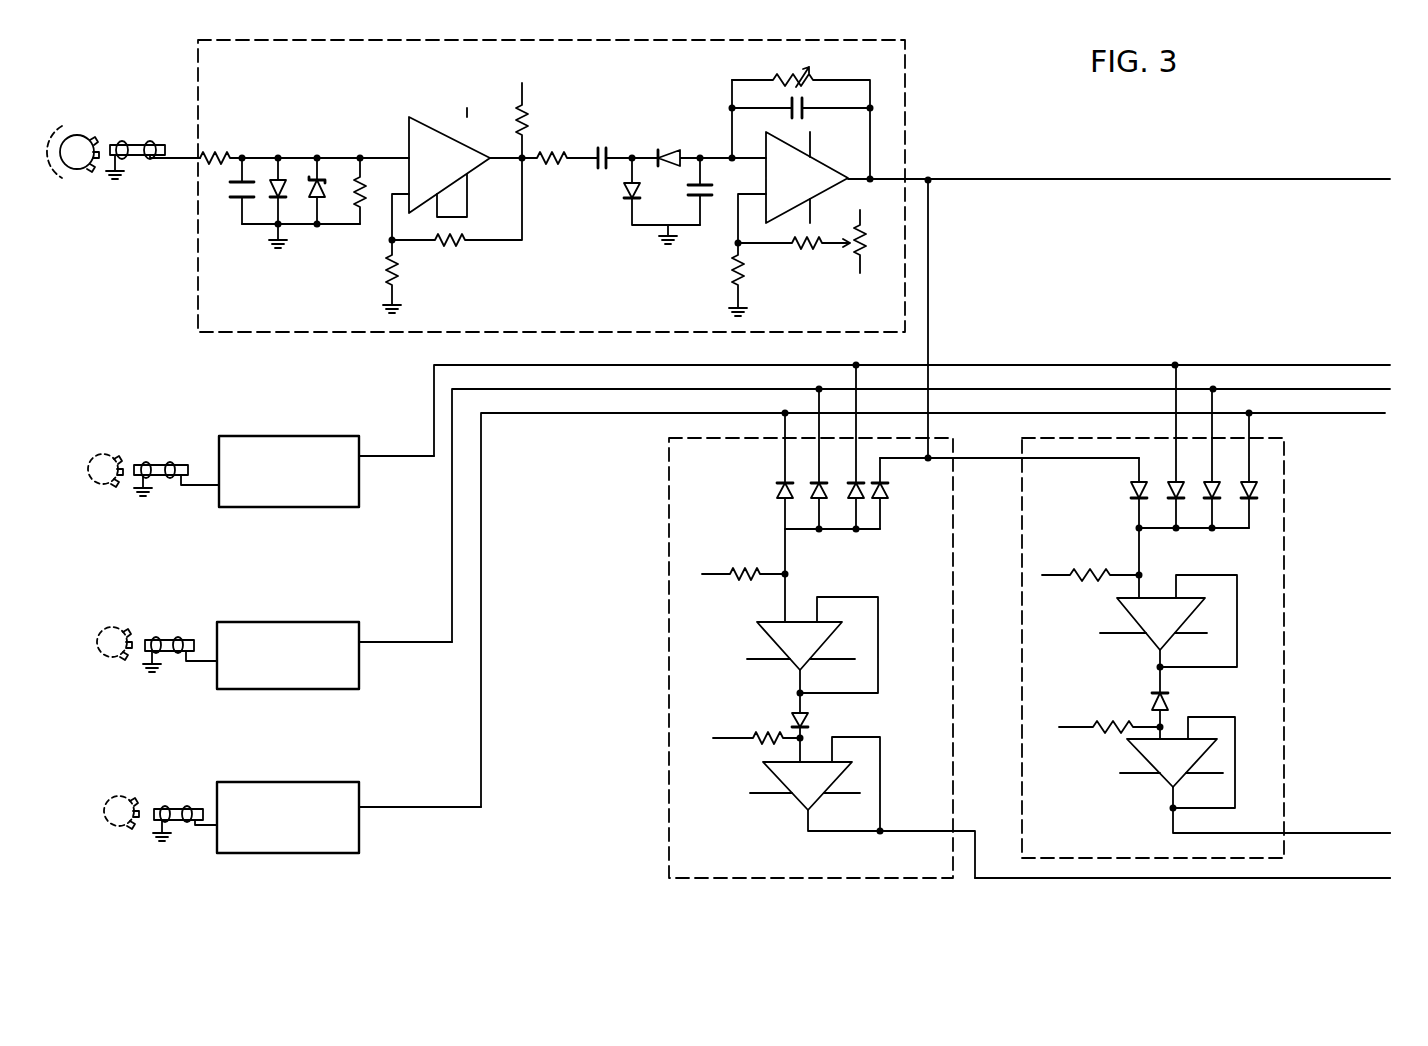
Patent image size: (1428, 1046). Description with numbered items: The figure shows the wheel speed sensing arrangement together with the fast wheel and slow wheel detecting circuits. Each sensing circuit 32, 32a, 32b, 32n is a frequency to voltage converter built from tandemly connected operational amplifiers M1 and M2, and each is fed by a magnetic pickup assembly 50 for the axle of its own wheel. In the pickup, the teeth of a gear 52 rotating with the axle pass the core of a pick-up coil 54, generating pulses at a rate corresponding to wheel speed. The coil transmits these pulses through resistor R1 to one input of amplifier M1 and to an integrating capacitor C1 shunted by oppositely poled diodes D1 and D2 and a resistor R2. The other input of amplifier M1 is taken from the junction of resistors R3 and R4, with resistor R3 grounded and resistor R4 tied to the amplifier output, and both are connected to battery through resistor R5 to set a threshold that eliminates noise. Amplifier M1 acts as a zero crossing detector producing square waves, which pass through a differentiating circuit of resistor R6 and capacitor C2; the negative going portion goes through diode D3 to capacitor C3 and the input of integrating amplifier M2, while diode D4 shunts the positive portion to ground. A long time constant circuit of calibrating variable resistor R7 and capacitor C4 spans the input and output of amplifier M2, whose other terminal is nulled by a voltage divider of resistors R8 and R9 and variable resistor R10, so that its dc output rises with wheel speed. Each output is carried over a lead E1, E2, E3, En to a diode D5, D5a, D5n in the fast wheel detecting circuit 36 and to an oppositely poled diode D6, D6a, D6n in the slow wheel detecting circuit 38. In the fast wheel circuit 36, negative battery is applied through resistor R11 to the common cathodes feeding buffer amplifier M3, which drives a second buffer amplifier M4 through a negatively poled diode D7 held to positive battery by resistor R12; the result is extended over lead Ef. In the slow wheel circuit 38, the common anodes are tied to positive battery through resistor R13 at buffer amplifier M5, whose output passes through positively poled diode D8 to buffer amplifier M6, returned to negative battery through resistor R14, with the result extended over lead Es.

The sensing circuit 32 is at (551, 186).
The sensing circuit 32a is at (326, 471).
The sensing circuit 32b is at (334, 655).
The sensing circuit 32n is at (349, 817).
The fast wheel detecting circuit 36 is at (1284, 598).
The slow wheel detecting circuit 38 is at (668, 682).
The magnetic pickup assembly 50 is at (82, 214).
The gear 52 is at (90, 131).
The pick-up coil 54 is at (150, 142).
The resistor R1 is at (228, 148).
The resistor R2 is at (353, 240).
The resistor R3 is at (410, 282).
The resistor R4 is at (451, 254).
The resistor R5 is at (526, 118).
The resistor R6 is at (546, 168).
The calibrating variable resistor R7 is at (778, 82).
The resistor R8 is at (732, 268).
The resistor R9 is at (806, 246).
The variable resistor R10 is at (850, 264).
The resistor R11 is at (1100, 548).
The resistor R12 is at (1118, 722).
The resistor R13 is at (748, 548).
The resistor R14 is at (759, 738).
The integrating capacitor C1 is at (224, 210).
The capacitor C2 is at (603, 148).
The capacitor C3 is at (684, 188).
The capacitor C4 is at (790, 100).
The diode D1 is at (280, 154).
The diode D2 is at (319, 156).
The diode D3 is at (668, 150).
The diode D4 is at (616, 206).
The diode D5 is at (1126, 490).
The diode D5a is at (1170, 500).
The diode D5n is at (1258, 490).
The diode D6 is at (889, 494).
The diode D6a is at (852, 507).
The diode D6n is at (772, 498).
The diode D7 is at (1170, 708).
The diode D8 is at (812, 724).
The operational amplifier M1 is at (449, 168).
The operational amplifier M2 is at (807, 174).
The buffer amplifier M3 is at (1116, 622).
The buffer amplifier M4 is at (1128, 748).
The buffer amplifier M5 is at (756, 632).
The buffer amplifier M6 is at (764, 780).
The lead E1 is at (1118, 178).
The lead E2 is at (1260, 366).
The lead E3 is at (1292, 388).
The lead En is at (1314, 412).
The lead Ef is at (1350, 832).
The lead Es is at (1314, 878).